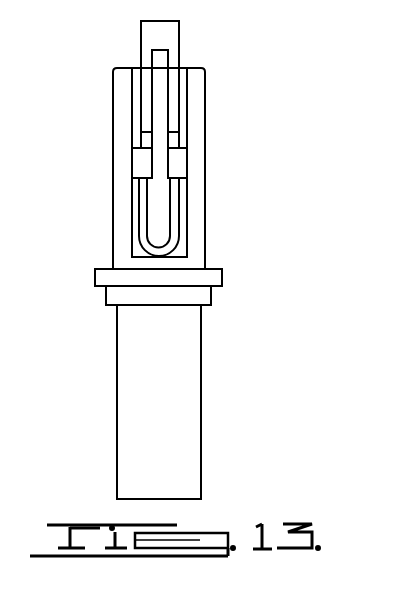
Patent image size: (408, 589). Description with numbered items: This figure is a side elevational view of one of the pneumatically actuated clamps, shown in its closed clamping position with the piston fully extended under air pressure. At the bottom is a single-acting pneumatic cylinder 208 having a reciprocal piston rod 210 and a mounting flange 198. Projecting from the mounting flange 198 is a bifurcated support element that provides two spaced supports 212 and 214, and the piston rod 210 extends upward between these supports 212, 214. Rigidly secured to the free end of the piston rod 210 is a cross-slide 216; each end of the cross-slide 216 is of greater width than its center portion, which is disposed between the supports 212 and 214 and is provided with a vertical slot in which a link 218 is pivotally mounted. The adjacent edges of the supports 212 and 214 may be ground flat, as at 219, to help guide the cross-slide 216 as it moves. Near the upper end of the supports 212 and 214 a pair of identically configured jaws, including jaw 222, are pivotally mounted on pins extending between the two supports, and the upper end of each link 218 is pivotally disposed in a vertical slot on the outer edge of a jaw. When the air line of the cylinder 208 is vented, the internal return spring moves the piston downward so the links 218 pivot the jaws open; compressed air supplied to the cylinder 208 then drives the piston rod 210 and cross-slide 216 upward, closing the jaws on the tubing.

The mounting flange 198 is at (218, 277).
The single-acting pneumatic cylinder 208 is at (192, 427).
The piston rod 210 is at (163, 217).
The support 212 is at (115, 138).
The support 214 is at (198, 119).
The cross-slide 216 is at (182, 163).
The link 218 is at (162, 94).
The ground flat edges 219 is at (135, 107).
The jaw 222 is at (179, 33).